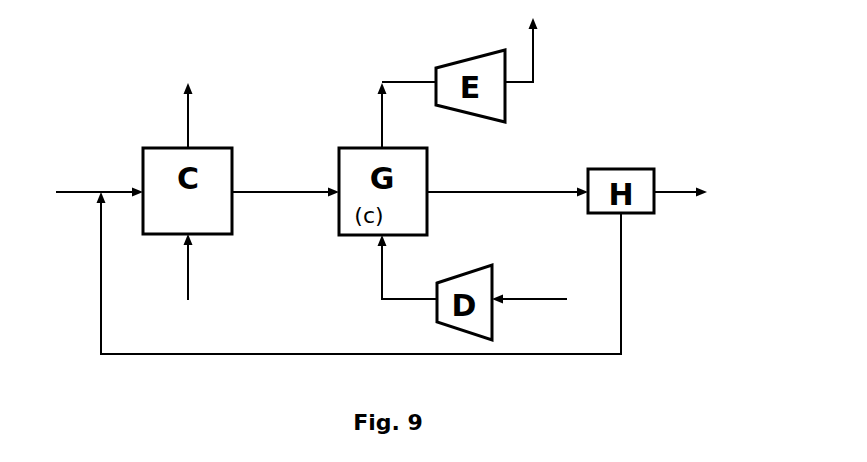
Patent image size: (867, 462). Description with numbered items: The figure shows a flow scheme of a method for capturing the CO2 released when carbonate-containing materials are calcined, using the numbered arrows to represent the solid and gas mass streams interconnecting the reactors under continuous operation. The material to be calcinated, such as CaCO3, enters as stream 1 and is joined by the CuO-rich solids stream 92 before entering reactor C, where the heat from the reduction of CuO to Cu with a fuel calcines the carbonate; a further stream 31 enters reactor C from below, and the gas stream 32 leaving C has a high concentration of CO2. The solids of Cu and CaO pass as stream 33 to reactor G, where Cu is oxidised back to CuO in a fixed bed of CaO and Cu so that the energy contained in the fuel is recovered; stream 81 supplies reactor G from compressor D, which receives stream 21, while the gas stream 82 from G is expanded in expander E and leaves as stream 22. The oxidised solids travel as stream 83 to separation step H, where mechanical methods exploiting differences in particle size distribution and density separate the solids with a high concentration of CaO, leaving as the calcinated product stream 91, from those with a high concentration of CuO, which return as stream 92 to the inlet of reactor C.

The stream of material to be calcinated 1 is at (99, 182).
The CuO-rich solids stream 92 is at (373, 273).
The CO2-rich gas stream 32 is at (176, 115).
The feed stream to unit C 31 is at (176, 267).
The stream from unit C to unit G 33 is at (285, 183).
The stream from unit G to expander E 82 is at (395, 115).
The outlet stream from expander E 22 is at (532, 50).
The stream from unit G to unit H 83 is at (507, 184).
The calcinated product stream 91 is at (680, 183).
The stream from compressor D to unit G 81 is at (396, 267).
The feed stream to compressor D 21 is at (529, 290).